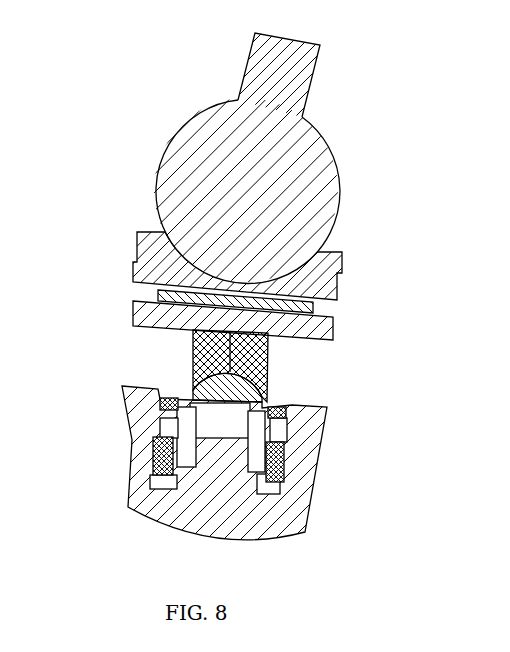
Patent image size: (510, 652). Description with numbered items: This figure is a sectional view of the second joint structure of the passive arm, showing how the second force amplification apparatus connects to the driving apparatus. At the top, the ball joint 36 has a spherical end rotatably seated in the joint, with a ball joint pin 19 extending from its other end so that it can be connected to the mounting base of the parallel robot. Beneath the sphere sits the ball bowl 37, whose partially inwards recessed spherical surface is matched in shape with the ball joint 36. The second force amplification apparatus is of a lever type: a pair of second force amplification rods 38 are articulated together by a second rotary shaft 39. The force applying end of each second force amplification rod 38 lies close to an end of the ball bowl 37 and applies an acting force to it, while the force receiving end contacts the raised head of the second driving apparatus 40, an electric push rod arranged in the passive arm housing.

The ball joint pin 19 is at (263, 85).
The ball joint 36 is at (170, 162).
The ball bowl 37 is at (150, 255).
The second force amplification rod 38 is at (190, 367).
The second rotary shaft 39 is at (140, 303).
The second driving apparatus 40 is at (270, 390).